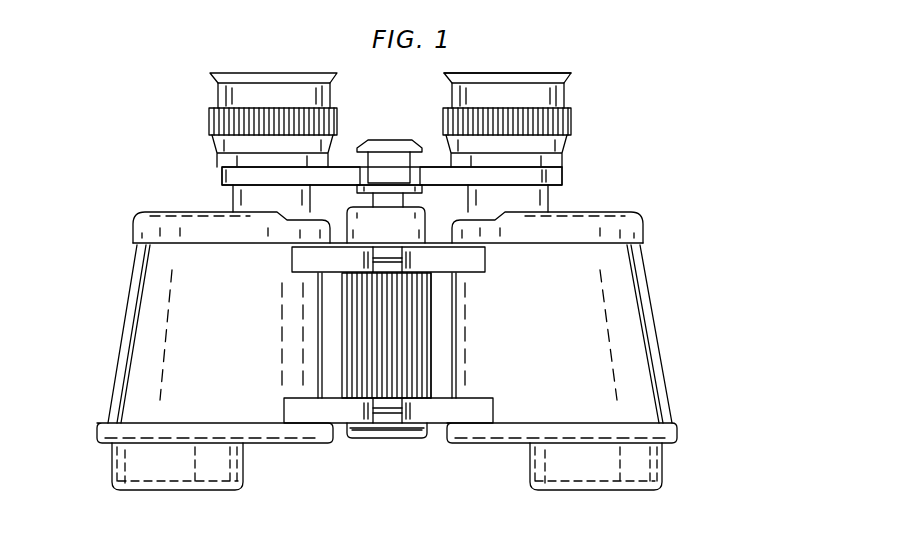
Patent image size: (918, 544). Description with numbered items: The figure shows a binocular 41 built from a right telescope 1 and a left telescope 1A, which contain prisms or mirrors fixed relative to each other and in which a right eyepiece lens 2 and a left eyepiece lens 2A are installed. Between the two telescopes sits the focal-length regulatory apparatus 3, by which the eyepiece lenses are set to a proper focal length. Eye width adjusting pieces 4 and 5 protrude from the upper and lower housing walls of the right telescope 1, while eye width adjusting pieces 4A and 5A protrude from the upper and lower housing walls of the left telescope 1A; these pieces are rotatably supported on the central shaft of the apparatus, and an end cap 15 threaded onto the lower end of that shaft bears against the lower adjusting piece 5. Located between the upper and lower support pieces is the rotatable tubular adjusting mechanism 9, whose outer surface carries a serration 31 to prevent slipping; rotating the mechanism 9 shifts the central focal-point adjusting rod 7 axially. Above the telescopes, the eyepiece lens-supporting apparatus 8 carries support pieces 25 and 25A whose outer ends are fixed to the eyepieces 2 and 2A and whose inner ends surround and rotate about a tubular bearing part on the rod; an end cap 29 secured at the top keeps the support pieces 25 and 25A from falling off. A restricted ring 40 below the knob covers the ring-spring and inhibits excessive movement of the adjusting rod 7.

The right telescope 1 is at (142, 330).
The left telescope 1A is at (630, 338).
The right eyepiece lens 2 is at (206, 122).
The left eyepiece lens 2A is at (582, 118).
The focal-length regulatory apparatus 3 is at (350, 462).
The eye width adjusting piece 4 is at (308, 258).
The eye width adjusting piece 4A is at (460, 262).
The eye width adjusting piece 5 is at (305, 418).
The eye width adjusting piece 5A is at (470, 418).
The focal-point adjusting rod 7 is at (410, 200).
The eyepiece lens-supporting apparatus 8 is at (575, 172).
The rotatable tubular adjusting mechanism 9 is at (332, 339).
The end cap 15 is at (400, 440).
The support piece 25 is at (224, 177).
The support piece 25A is at (562, 186).
The end cap 29 is at (390, 140).
The serration 31 is at (436, 342).
The restricted ring 40 is at (366, 222).
The binocular 41 is at (526, 64).